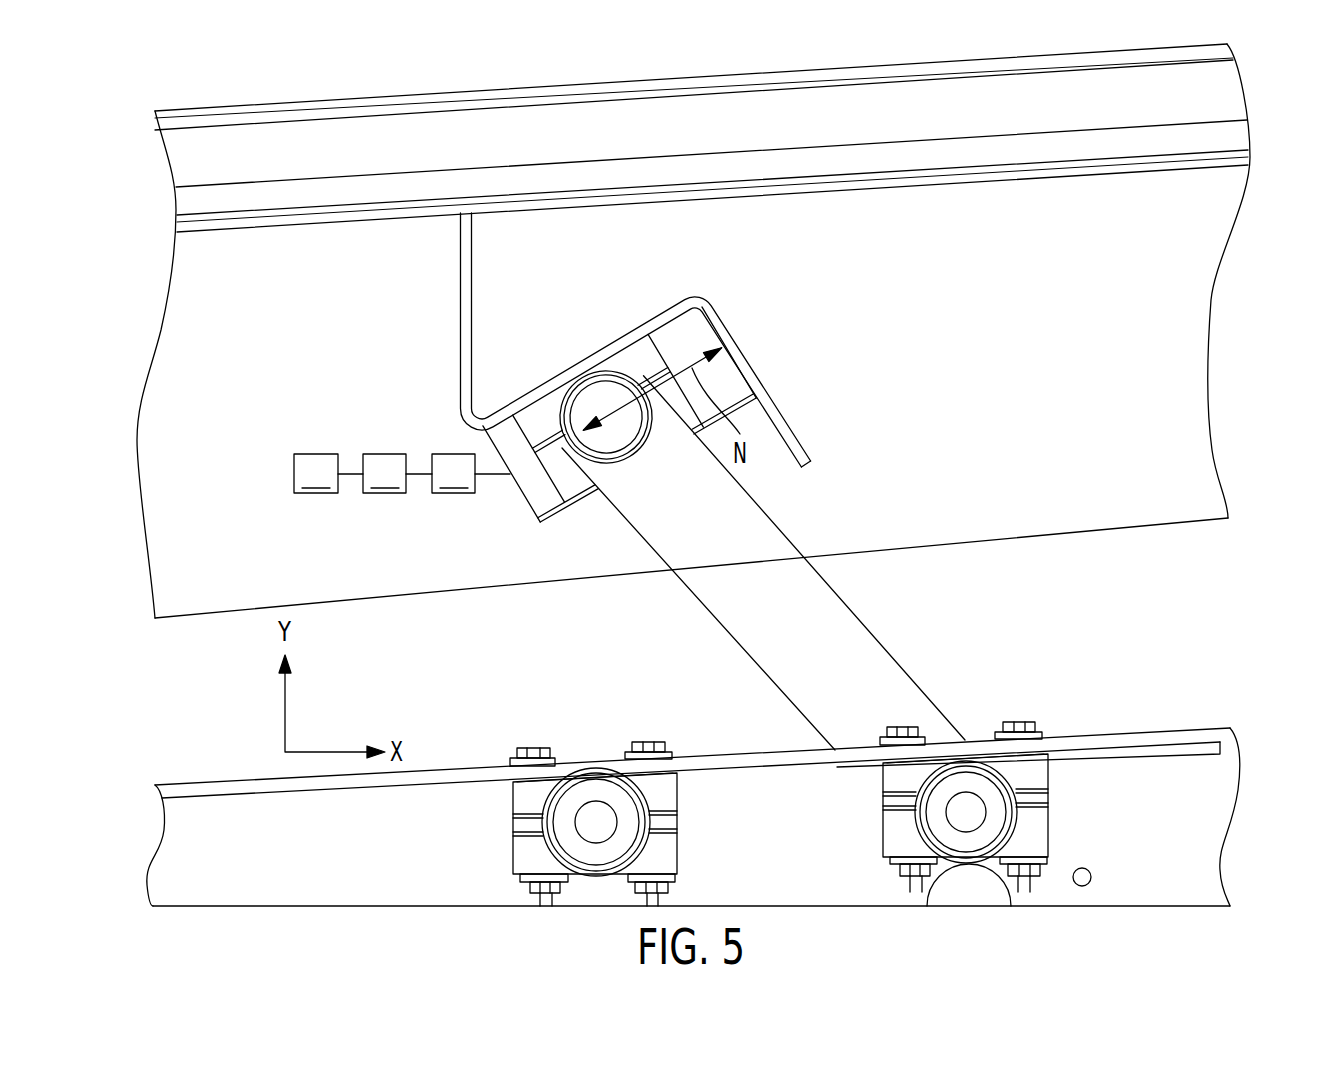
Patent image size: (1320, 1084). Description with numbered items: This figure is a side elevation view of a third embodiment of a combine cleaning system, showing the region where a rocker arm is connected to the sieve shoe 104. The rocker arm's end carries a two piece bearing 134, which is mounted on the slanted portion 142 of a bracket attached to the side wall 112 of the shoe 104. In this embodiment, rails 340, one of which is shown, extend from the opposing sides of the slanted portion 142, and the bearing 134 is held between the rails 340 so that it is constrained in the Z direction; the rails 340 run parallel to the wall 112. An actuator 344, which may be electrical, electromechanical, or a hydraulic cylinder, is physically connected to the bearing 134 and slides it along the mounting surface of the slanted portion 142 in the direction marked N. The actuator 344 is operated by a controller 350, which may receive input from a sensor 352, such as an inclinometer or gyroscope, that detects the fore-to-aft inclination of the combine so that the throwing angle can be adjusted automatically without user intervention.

The sieve shoe 104 is at (1200, 326).
The side wall of the shoe 112 is at (1000, 519).
The two piece bearing 134 is at (628, 464).
The slanted portion of the bracket 142 is at (574, 366).
The rails 340 is at (704, 307).
The actuator 344 is at (471, 473).
The controller 350 is at (397, 473).
The sensor 352 is at (328, 473).